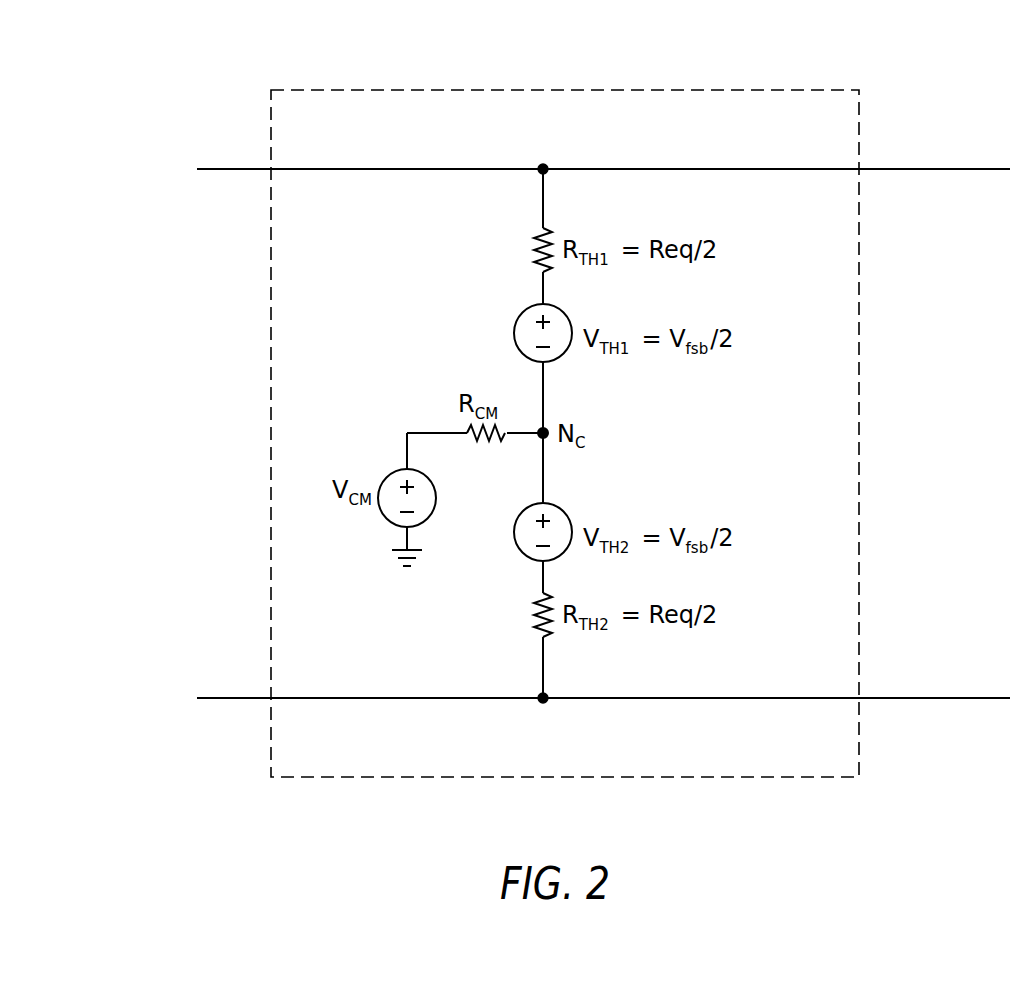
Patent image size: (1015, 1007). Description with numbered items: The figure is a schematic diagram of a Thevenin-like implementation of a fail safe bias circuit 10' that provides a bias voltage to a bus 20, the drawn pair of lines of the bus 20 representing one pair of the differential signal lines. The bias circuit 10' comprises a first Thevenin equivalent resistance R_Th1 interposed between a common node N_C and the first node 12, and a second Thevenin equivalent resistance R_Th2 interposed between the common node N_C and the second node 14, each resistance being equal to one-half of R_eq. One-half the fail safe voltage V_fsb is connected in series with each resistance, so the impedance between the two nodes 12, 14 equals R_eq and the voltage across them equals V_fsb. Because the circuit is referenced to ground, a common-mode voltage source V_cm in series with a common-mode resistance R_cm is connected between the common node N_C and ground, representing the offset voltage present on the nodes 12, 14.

The bias circuit 10' is at (565, 403).
The first node 12 is at (545, 164).
The second node 14 is at (543, 701).
The bus 20 is at (947, 171).